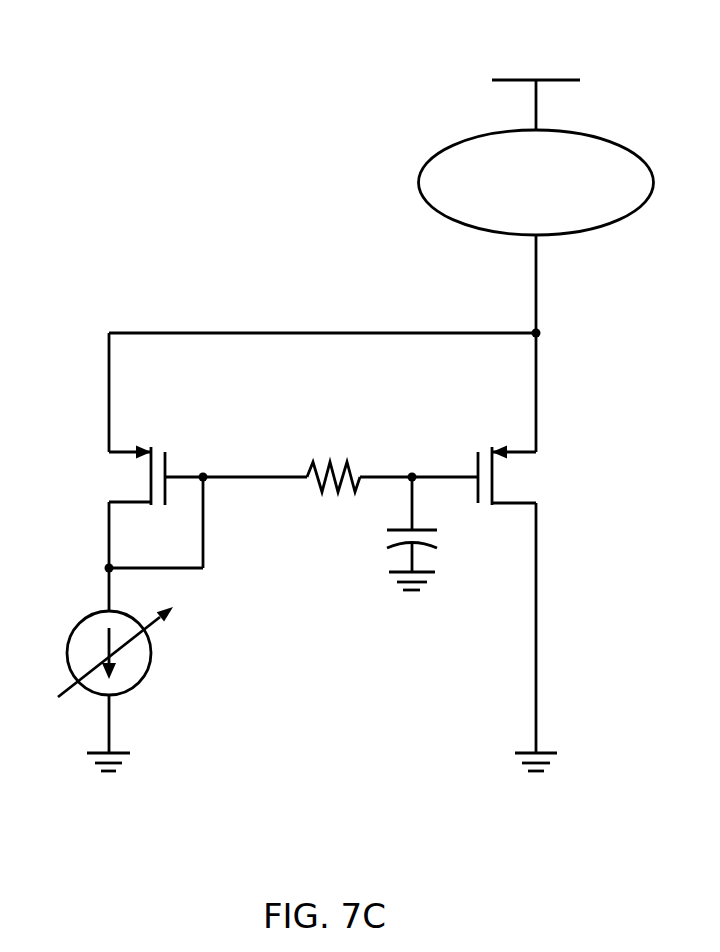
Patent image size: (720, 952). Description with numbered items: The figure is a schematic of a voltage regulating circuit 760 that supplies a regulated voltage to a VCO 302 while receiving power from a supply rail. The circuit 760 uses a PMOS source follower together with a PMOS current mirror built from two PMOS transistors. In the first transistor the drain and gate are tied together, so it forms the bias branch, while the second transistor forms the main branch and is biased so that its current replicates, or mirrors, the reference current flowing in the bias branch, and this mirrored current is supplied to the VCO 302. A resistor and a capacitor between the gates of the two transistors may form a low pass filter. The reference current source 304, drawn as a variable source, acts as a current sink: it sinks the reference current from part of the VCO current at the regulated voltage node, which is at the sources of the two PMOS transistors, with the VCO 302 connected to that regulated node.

The voltage regulating circuit 760 is at (350, 391).
The VCO 302 is at (606, 140).
The reference current source 304 is at (90, 616).